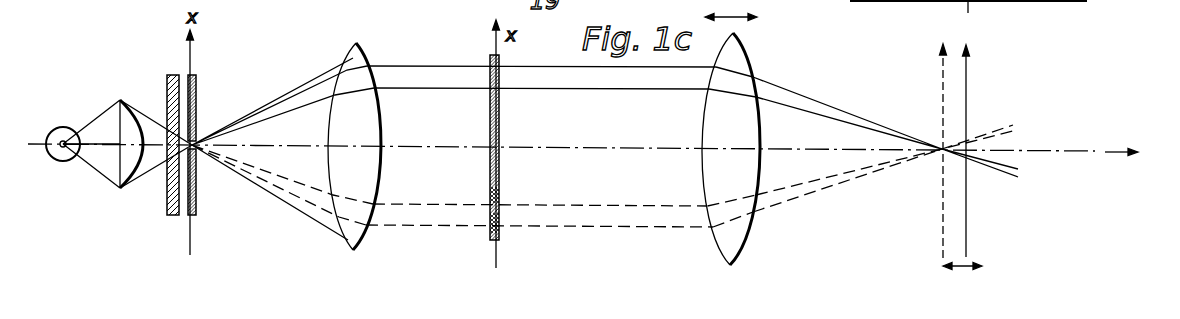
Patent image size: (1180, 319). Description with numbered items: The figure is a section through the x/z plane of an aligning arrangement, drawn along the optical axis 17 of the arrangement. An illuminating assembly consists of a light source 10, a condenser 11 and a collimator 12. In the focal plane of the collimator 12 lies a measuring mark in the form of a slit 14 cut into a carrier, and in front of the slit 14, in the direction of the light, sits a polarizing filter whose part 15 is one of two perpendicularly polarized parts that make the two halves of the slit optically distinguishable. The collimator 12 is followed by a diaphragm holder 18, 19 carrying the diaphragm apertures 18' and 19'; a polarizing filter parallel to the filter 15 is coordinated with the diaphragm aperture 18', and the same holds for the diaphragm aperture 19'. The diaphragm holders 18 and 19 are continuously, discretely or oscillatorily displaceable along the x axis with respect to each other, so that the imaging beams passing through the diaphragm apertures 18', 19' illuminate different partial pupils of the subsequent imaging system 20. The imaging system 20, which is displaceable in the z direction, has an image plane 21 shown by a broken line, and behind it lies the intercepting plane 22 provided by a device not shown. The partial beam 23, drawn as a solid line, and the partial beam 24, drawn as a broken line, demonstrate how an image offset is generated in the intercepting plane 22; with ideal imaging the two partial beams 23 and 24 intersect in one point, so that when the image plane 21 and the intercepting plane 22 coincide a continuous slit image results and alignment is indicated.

The light source 10 is at (58, 137).
The condenser 11 is at (128, 158).
The collimator 12 is at (355, 60).
The slit 14 is at (198, 142).
The polarizing filter part 15 is at (168, 104).
The optical axis 17 is at (1095, 152).
The diaphragm holder 18 is at (518, 147).
The diaphragm aperture 18' is at (467, 56).
The diaphragm holder 19 is at (517, 183).
The diaphragm aperture 19' is at (521, 239).
The imaging system 20 is at (732, 50).
The image plane 21 is at (943, 95).
The intercepting plane 22 is at (967, 92).
The partial beam 23 is at (817, 110).
The partial beam 24 is at (834, 190).